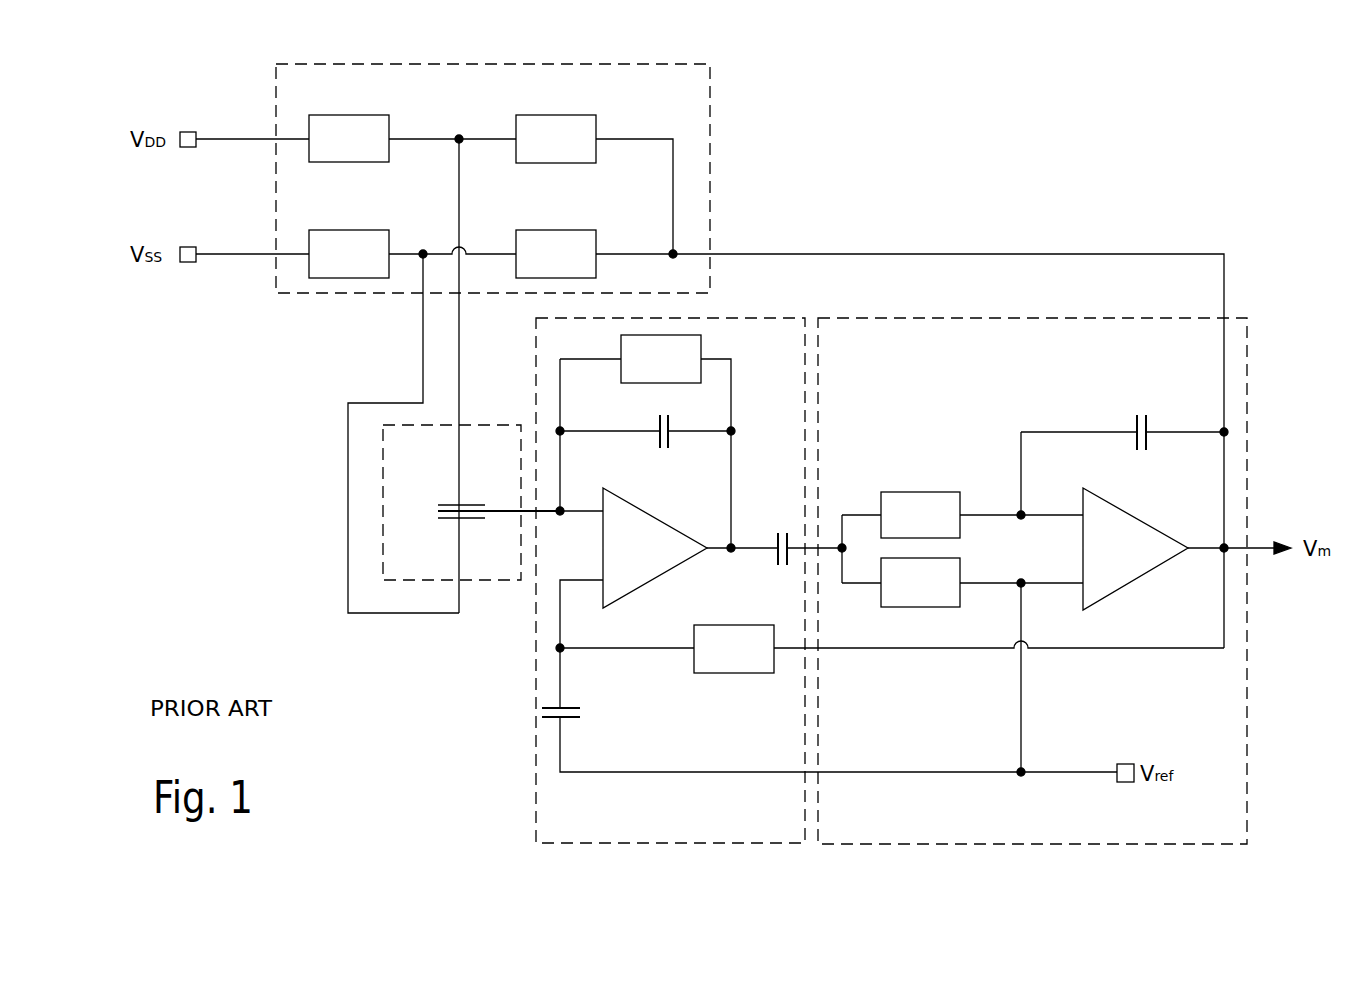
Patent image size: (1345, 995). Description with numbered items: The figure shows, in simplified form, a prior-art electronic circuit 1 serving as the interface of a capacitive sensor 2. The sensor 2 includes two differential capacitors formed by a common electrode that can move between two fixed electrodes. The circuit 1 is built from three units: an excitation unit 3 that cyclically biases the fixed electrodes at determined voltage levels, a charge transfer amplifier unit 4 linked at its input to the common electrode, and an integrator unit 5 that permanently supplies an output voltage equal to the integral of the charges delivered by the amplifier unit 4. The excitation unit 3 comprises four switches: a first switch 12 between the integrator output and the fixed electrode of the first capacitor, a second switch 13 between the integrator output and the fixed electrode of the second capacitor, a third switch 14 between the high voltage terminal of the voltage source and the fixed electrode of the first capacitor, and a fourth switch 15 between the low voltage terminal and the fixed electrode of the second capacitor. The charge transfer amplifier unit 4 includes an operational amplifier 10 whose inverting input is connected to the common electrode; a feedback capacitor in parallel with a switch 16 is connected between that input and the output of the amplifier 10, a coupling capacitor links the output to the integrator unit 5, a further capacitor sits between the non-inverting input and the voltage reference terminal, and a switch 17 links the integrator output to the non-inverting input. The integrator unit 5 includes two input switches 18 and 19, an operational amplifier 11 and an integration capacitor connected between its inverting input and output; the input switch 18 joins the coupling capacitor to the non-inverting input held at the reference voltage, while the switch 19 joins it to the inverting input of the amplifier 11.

The electronic circuit 1 is at (1028, 206).
The capacitive sensor 2 is at (420, 586).
The excitation unit 3 is at (712, 86).
The charge transfer amplifier unit 4 is at (764, 312).
The integrator unit 5 is at (1145, 312).
The operational amplifier 10 is at (655, 565).
The operational amplifier 11 is at (1155, 555).
The first switch 12 is at (583, 120).
The second switch 13 is at (583, 237).
The third switch 14 is at (316, 127).
The fourth switch 15 is at (357, 278).
The switch 16 is at (693, 353).
The switch 17 is at (743, 668).
The input switch 18 is at (928, 601).
The switch 19 is at (921, 500).